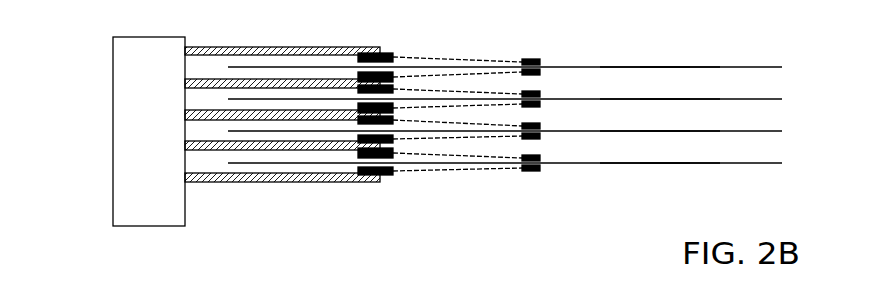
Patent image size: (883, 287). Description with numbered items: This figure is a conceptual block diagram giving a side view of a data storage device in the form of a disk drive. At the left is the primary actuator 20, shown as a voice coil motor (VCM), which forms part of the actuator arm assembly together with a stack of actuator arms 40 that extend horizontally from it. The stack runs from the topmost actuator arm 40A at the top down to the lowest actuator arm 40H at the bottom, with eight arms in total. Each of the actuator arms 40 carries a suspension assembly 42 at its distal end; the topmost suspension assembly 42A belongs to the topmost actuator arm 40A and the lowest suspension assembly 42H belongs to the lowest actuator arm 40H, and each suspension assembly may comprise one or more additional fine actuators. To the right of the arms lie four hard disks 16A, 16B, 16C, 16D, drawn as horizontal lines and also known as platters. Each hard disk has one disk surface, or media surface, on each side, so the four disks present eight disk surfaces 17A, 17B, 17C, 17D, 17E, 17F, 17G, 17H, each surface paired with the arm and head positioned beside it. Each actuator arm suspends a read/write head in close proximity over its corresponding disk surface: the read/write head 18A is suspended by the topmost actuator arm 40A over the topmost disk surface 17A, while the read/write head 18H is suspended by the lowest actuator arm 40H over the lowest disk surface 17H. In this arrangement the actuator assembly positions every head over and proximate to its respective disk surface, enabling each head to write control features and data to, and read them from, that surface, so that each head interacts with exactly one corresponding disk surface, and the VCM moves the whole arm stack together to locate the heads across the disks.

The primary actuator 20 is at (113, 71).
The actuator arms 40 is at (289, 133).
The topmost actuator arm 40A is at (302, 47).
The lowest actuator arm 40H is at (250, 182).
The suspension assembly 42 is at (471, 134).
The topmost suspension assembly 42A is at (481, 47).
The lowest suspension assembly 42H is at (479, 185).
The read/write head 18A is at (545, 58).
The read/write head 18H is at (545, 172).
The disk surface 17A is at (697, 67).
The disk surface 17B is at (678, 69).
The disk surface 17C is at (697, 99).
The disk surface 17D is at (678, 101).
The disk surface 17E is at (697, 131).
The disk surface 17F is at (678, 133).
The disk surface 17G is at (697, 163).
The disk surface 17H is at (678, 165).
The hard disk 16A is at (796, 67).
The hard disk 16B is at (796, 99).
The hard disk 16C is at (796, 131).
The hard disk 16D is at (796, 163).